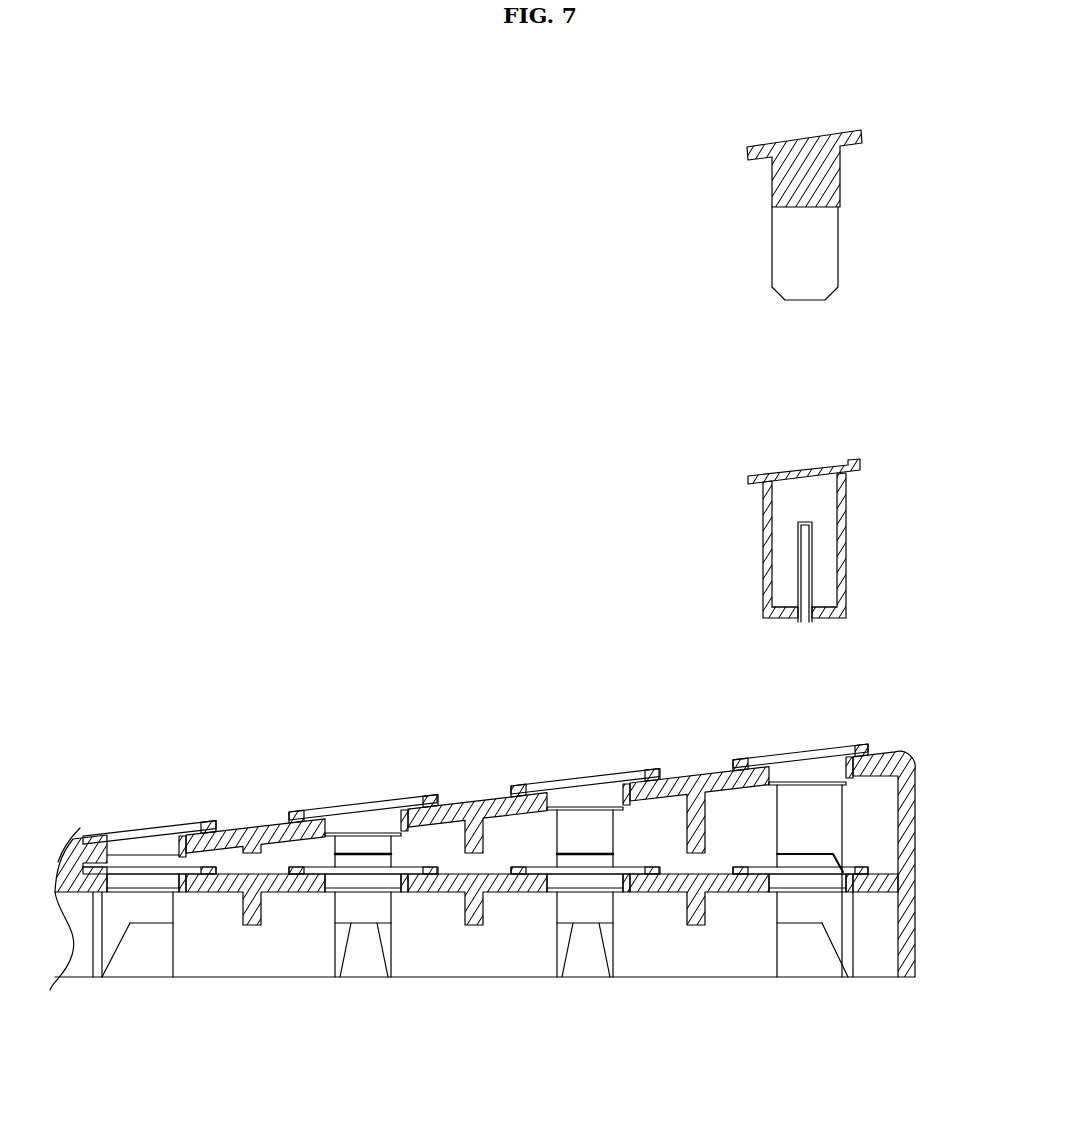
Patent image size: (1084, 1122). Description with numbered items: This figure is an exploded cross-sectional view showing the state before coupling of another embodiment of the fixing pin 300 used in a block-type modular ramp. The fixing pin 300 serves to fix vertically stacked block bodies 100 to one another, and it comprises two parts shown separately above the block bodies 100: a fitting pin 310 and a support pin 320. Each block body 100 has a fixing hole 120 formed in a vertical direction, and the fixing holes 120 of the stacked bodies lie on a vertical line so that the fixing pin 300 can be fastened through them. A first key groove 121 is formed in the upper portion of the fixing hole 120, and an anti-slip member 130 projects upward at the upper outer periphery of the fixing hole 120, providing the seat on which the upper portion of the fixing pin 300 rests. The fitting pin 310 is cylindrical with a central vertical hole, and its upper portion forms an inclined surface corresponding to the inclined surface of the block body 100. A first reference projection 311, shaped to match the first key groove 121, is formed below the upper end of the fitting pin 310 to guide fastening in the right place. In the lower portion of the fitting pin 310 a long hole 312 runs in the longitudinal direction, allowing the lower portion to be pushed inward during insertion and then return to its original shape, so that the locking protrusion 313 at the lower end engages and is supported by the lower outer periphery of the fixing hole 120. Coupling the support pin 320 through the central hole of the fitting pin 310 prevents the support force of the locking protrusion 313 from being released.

The block body 100 is at (277, 957).
The fixing hole 120 is at (350, 824).
The first key groove 121 is at (410, 818).
The anti-slip member 130 is at (302, 818).
The fixing pin 300 is at (581, 64).
The fitting pin 310 is at (726, 476).
The first reference projection 311 is at (847, 484).
The long hole 312 is at (805, 545).
The locking protrusion 313 is at (762, 604).
The support pin 320 is at (726, 141).